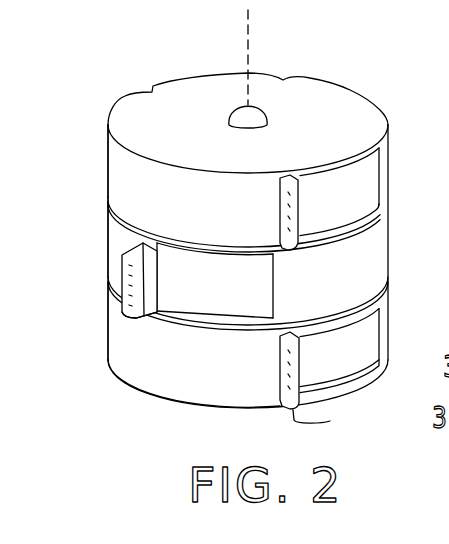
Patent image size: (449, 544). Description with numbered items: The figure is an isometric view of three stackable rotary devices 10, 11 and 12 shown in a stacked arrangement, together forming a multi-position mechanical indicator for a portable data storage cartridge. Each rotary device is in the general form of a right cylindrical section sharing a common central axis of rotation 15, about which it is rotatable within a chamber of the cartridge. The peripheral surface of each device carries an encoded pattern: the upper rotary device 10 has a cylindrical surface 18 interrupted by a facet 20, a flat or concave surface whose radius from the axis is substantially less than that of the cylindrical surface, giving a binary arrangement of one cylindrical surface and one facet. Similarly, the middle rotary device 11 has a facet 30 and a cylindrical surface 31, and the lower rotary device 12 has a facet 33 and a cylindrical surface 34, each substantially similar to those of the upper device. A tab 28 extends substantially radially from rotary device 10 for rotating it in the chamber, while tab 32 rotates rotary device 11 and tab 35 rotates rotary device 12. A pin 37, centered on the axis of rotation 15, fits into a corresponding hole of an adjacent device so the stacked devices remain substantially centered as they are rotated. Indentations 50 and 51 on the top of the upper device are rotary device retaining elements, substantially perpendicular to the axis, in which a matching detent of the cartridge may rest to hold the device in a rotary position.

The stackable rotary device 10 is at (108, 183).
The stackable rotary device 11 is at (114, 252).
The stackable rotary device 12 is at (108, 333).
The central axis of rotation 15 is at (248, 63).
The cylindrical surface 18 is at (233, 211).
The facet 20 is at (345, 187).
The tab 28 is at (282, 184).
The facet 30 is at (213, 284).
The cylindrical surface 31 is at (110, 257).
The tab 32 is at (136, 318).
The facet 33 is at (337, 351).
The cylindrical surface 34 is at (231, 366).
The tab 35 is at (330, 421).
The pin 37 is at (230, 112).
The indentation 50 is at (153, 91).
The indentation 51 is at (283, 80).